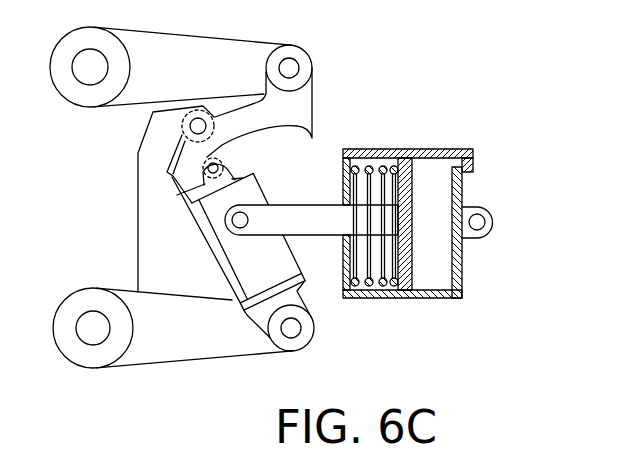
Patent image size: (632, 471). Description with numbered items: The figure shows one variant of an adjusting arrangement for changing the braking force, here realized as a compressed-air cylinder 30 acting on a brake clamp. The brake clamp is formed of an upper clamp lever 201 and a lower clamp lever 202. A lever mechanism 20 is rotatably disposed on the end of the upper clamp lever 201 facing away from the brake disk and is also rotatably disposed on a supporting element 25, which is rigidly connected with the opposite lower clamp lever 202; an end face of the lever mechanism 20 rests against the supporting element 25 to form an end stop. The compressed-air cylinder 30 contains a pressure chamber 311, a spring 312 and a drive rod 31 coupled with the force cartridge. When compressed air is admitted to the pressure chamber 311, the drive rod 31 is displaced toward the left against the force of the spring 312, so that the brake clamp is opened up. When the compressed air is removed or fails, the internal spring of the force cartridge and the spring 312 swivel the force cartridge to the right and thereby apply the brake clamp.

The lever mechanism 20 is at (312, 98).
The upper clamp lever 201 is at (150, 32).
The lower clamp lever 202 is at (168, 367).
The supporting element 25 is at (193, 283).
The compressed-air cylinder 30 is at (557, 167).
The drive rod 31 is at (328, 237).
The pressure chamber 311 is at (441, 273).
The spring 312 is at (369, 168).